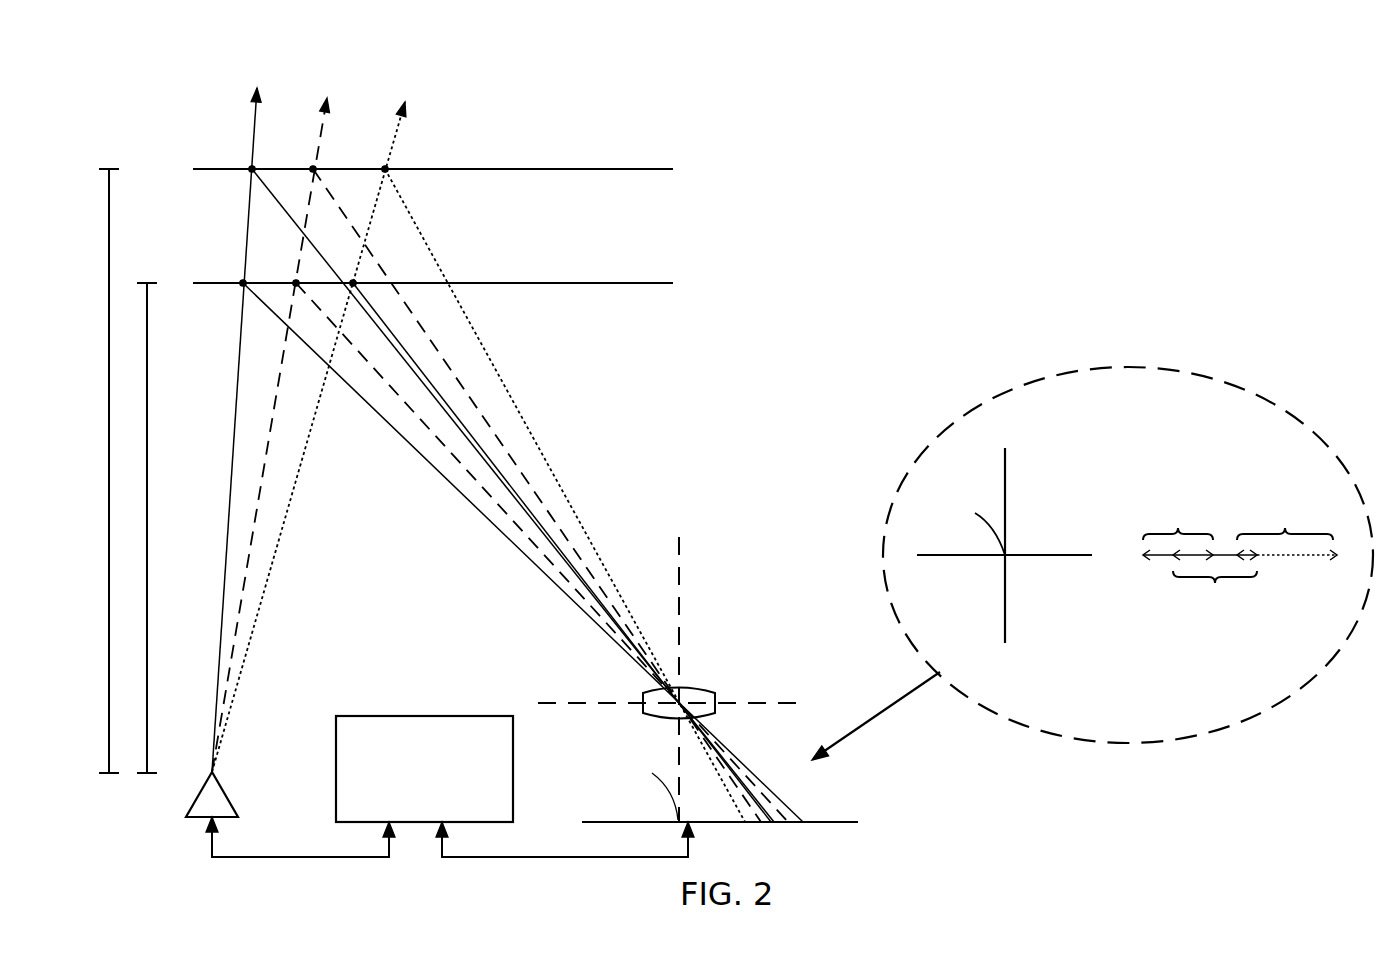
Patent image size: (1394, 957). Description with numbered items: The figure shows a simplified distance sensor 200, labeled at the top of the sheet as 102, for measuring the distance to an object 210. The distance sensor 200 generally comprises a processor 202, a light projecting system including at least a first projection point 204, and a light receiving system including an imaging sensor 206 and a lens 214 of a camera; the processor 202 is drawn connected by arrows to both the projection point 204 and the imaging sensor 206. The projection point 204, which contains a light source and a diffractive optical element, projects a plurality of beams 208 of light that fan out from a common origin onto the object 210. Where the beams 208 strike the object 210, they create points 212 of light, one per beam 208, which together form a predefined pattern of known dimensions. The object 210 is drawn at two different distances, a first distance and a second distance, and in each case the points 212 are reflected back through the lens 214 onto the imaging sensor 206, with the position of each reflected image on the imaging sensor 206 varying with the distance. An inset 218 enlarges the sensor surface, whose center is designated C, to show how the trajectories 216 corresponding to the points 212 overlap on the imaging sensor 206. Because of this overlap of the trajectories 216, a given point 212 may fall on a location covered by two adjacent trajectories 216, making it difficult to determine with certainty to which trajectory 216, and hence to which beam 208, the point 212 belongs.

The scanning system 102 is at (370, 46).
The distance sensor 200 is at (403, 680).
The processor 202 is at (406, 788).
The first projection point 204 is at (232, 800).
The imaging sensor 206 is at (655, 822).
The beams of light 208 is at (228, 493).
The object 210 is at (673, 169).
The points of light 212 is at (250, 167).
The lens 214 is at (712, 690).
The trajectories 216 is at (1240, 557).
The inset 218 is at (1250, 393).